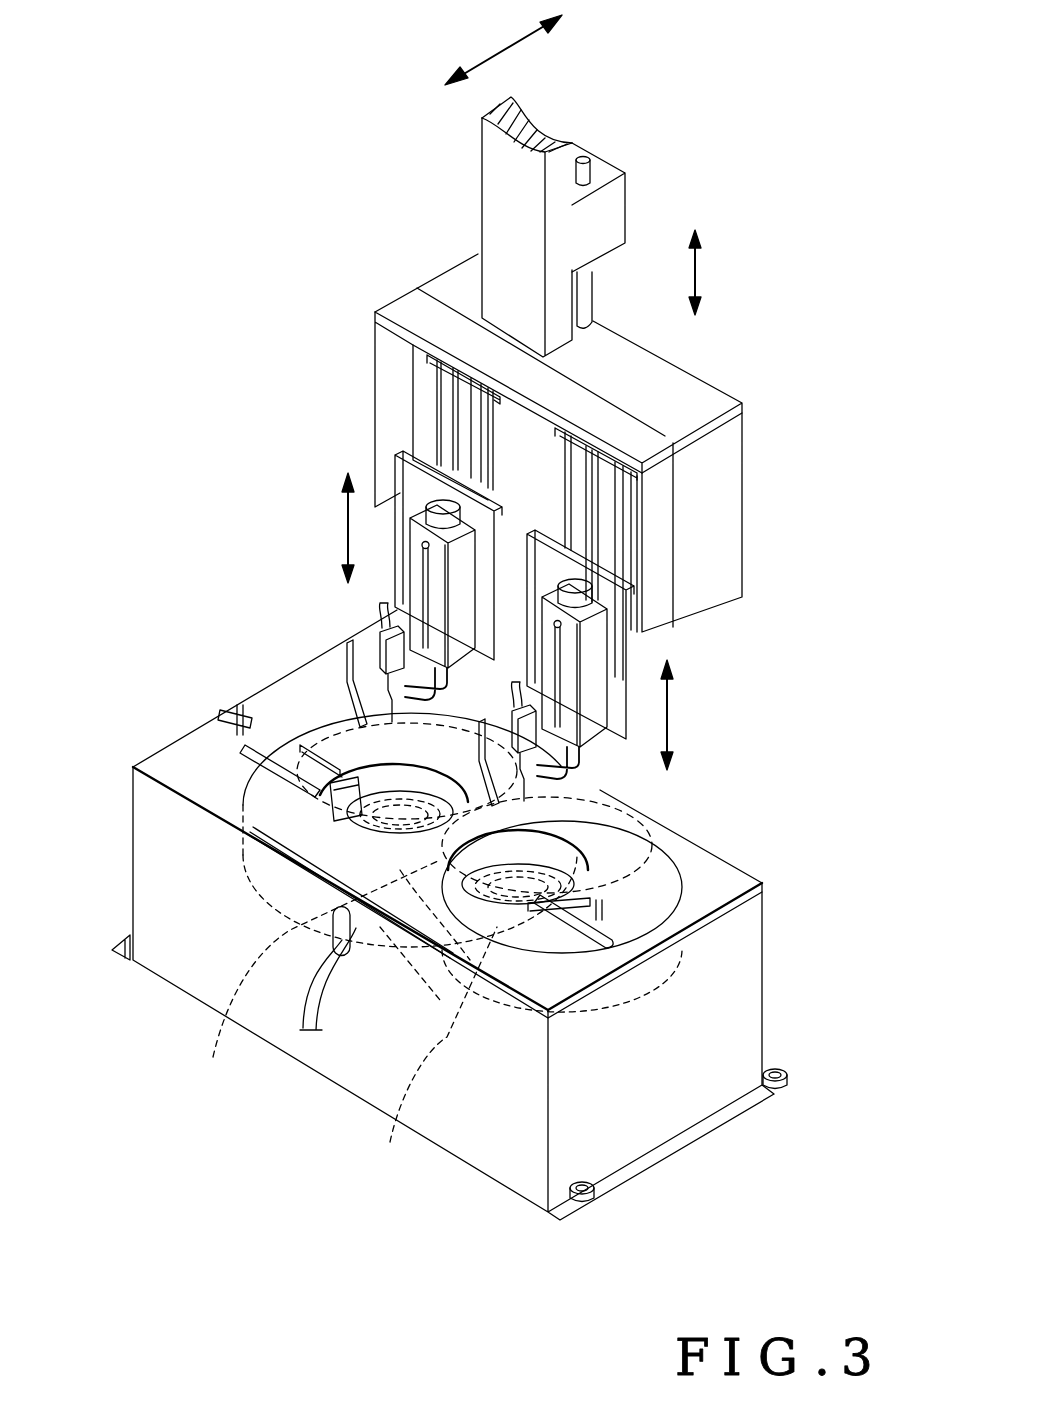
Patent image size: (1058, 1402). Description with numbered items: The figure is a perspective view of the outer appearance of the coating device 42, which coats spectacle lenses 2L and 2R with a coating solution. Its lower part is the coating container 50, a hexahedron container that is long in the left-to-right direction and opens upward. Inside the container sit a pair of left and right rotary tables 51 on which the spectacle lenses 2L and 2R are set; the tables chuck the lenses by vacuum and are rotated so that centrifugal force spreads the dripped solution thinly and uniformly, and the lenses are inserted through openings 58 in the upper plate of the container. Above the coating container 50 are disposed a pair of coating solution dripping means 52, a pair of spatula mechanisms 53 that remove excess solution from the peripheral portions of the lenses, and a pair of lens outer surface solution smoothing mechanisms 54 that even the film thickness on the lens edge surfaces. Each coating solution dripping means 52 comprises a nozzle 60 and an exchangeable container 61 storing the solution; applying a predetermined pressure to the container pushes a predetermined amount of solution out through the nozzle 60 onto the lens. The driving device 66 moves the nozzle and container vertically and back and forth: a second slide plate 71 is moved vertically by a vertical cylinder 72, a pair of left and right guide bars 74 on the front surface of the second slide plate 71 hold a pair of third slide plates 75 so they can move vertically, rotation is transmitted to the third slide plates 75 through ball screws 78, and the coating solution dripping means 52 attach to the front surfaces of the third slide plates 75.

The vertical cylinder 72 is at (612, 210).
The driving device 66 is at (803, 305).
The second slide plate 71 is at (372, 310).
The ball screws 78 is at (460, 400).
The guide bars 74 is at (480, 455).
The third slide plates 75 is at (398, 462).
The exchangeable container 61 is at (408, 505).
The coating solution dripping means 52 is at (352, 597).
The coating device 42 is at (111, 630).
The spatula mechanisms 53 is at (335, 682).
The lens outer surface solution smoothing mechanisms 54 is at (222, 742).
The coating container 50 is at (160, 836).
The openings 58 is at (360, 820).
The nozzle 60 is at (545, 825).
The spectacle lens 2L is at (272, 800).
The spectacle lens 2R is at (565, 862).
The rotary tables 51 is at (347, 1020).